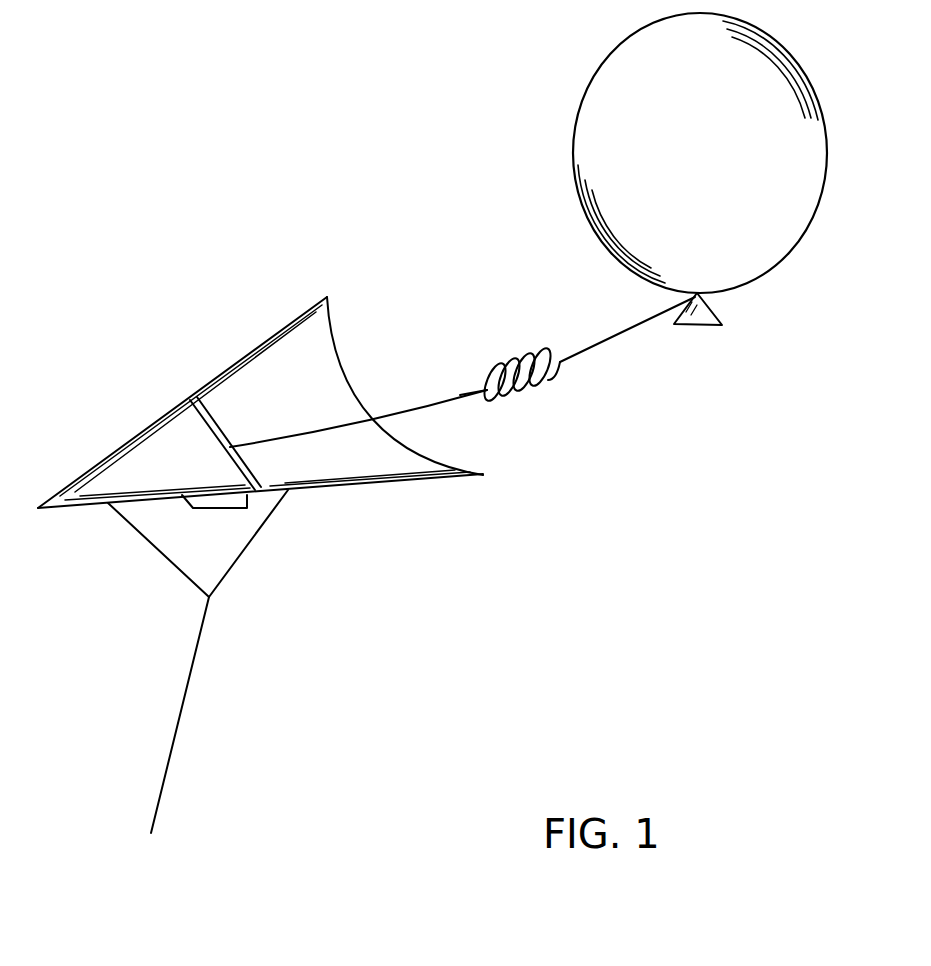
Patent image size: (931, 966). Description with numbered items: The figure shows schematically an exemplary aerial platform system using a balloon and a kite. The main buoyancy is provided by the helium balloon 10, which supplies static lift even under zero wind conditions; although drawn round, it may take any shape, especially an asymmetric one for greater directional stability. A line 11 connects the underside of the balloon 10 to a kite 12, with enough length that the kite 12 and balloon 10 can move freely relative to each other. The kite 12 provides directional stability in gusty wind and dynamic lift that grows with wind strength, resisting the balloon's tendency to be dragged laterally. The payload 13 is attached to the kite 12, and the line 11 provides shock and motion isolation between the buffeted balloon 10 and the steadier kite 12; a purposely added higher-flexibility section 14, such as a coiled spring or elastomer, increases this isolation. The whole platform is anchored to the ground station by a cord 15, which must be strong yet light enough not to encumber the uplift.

The helium balloon 10 is at (593, 72).
The line 11 is at (613, 341).
The kite 12 is at (313, 300).
The payload 13 is at (222, 509).
The section having a higher flexibility 14 is at (538, 397).
The cord 15 is at (183, 707).